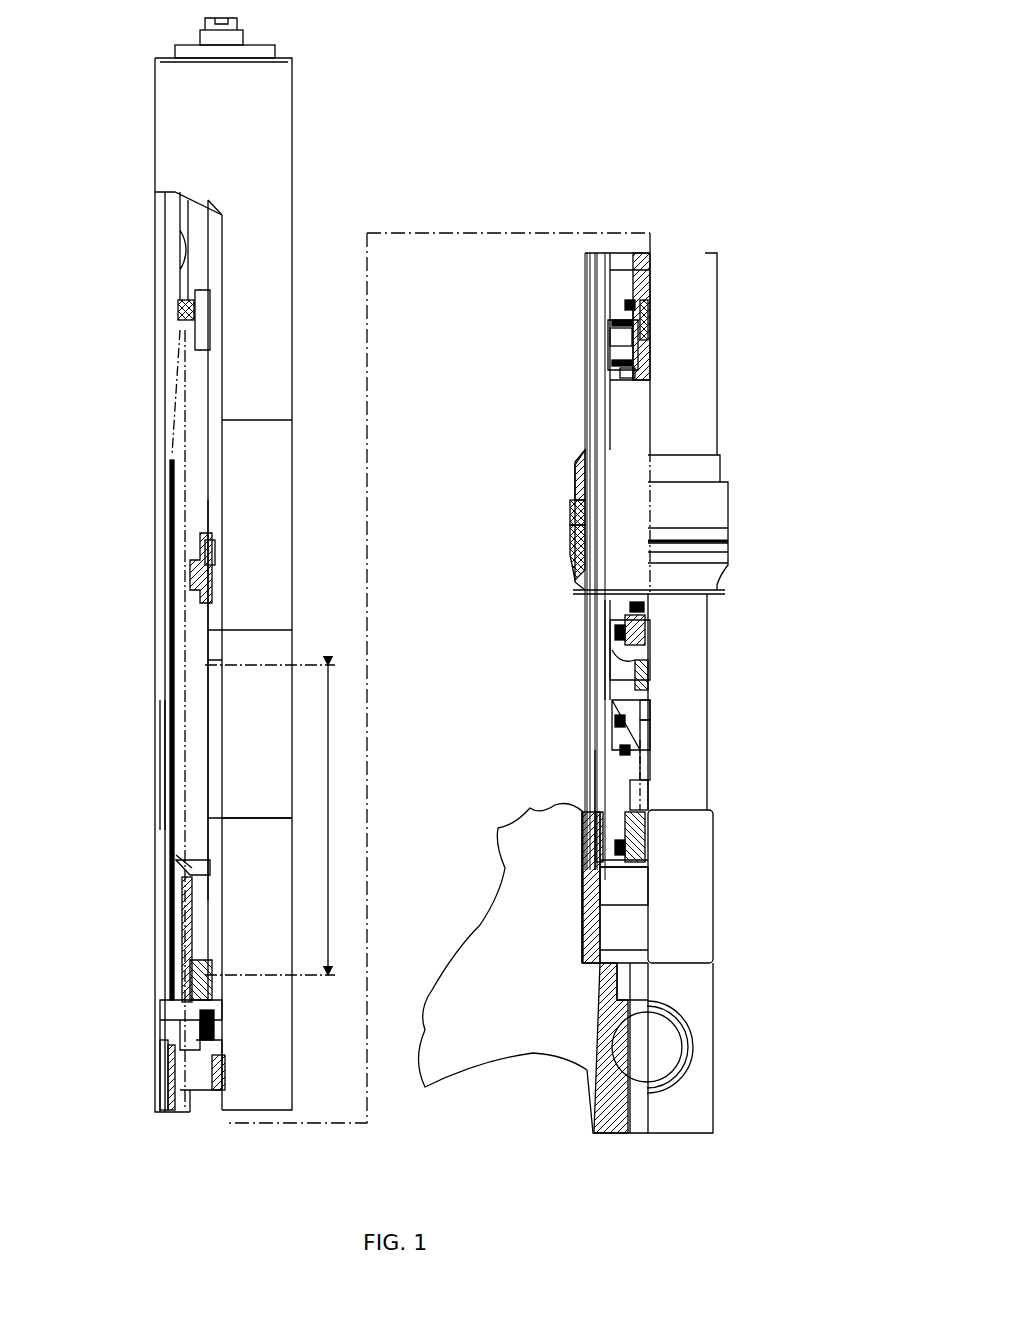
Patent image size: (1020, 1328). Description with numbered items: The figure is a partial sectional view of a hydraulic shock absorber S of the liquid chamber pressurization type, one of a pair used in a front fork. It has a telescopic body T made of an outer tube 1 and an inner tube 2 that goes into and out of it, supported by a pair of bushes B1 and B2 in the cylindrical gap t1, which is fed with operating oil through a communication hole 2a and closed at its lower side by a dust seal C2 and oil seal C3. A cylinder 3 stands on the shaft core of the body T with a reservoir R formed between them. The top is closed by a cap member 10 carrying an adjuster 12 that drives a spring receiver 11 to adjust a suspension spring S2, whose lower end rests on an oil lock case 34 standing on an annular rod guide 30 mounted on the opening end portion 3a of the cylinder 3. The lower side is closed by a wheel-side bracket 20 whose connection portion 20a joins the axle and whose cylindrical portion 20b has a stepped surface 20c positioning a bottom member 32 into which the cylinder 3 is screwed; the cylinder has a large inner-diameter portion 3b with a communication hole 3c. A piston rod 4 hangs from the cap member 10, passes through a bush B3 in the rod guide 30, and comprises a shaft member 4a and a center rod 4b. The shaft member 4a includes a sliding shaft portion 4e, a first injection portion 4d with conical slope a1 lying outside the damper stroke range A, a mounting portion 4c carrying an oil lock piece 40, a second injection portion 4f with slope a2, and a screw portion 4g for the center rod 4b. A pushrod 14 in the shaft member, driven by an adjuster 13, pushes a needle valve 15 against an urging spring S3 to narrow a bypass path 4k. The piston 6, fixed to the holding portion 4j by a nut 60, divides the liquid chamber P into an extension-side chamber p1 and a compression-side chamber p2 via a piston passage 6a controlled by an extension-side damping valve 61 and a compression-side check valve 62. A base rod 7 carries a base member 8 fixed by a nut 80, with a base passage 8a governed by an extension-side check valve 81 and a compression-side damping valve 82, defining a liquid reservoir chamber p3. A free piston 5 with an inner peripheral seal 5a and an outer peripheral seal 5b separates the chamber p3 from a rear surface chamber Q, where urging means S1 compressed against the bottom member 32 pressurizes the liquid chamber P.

The outer tube 1 is at (288, 245).
The inner tube 2 is at (710, 690).
The communication hole 2a is at (172, 1050).
The cylinder 3 is at (593, 455).
The vehicle-body side opening end portion 3a is at (175, 1070).
The large inner-diameter portion 3b is at (598, 820).
The communication hole 3c is at (595, 792).
The piston rod 4 is at (207, 372).
The shaft member 4a is at (208, 715).
The center rod 4b is at (637, 275).
The mounting portion 4c is at (215, 548).
The first injection portion 4d is at (222, 648).
The sliding shaft portion 4e is at (222, 790).
The second injection portion 4f is at (215, 1022).
The screw portion 4g is at (225, 1068).
The holding portion 4j is at (648, 345).
The bypass path 4k is at (648, 370).
The free piston 5 is at (615, 740).
The inner peripheral seal 5a is at (650, 722).
The outer peripheral seal 5b is at (617, 720).
The piston 6 is at (610, 352).
The extension-side piston passage 6a is at (612, 335).
The base rod 7 is at (650, 752).
The base member 8 is at (612, 665).
The extension-side base passage 8a is at (645, 630).
The cap member 10 is at (280, 52).
The spring receiver 11 is at (180, 205).
The adjuster 12 is at (250, 40).
The adjuster 13 is at (205, 22).
The pushrod 14 is at (652, 262).
The needle valve 15 is at (645, 325).
The wheel-side bracket 20 is at (714, 930).
The connection portion 20a is at (690, 1063).
The cylindrical portion 20b is at (705, 850).
The stepped surface 20c is at (600, 900).
The rod guide 30 is at (185, 1005).
The bottom member 32 is at (640, 870).
The oil lock case 34 is at (185, 910).
The oil lock piece 40 is at (212, 580).
The nut 60 is at (628, 378).
The extension-side damping valve 61 is at (618, 365).
The compression-side check valve 62 is at (618, 322).
The nut 80 is at (632, 607).
The extension-side check valve 81 is at (617, 632).
The compression-side damping valve 82 is at (645, 680).
The range of damper stroke A is at (338, 820).
The bush B1 is at (170, 540).
The bush B2 is at (580, 480).
The bush B3 is at (212, 965).
The dust seal C2 is at (575, 548).
The oil seal C3 is at (572, 515).
The liquid chamber P is at (640, 440).
The rear surface chamber Q is at (645, 790).
The reservoir R is at (185, 445).
The hydraulic shock absorber S is at (658, 175).
The urging means S1 is at (622, 752).
The suspension spring S2 is at (180, 310).
The urging spring S3 is at (635, 305).
The body T is at (294, 180).
The conical slope portion a1 is at (215, 662).
The conical slope portion a2 is at (222, 990).
The extension-side chamber p1 is at (588, 270).
The compression-side chamber p2 is at (585, 560).
The liquid reservoir chamber p3 is at (605, 688).
The cylindrical gap t1 is at (170, 768).